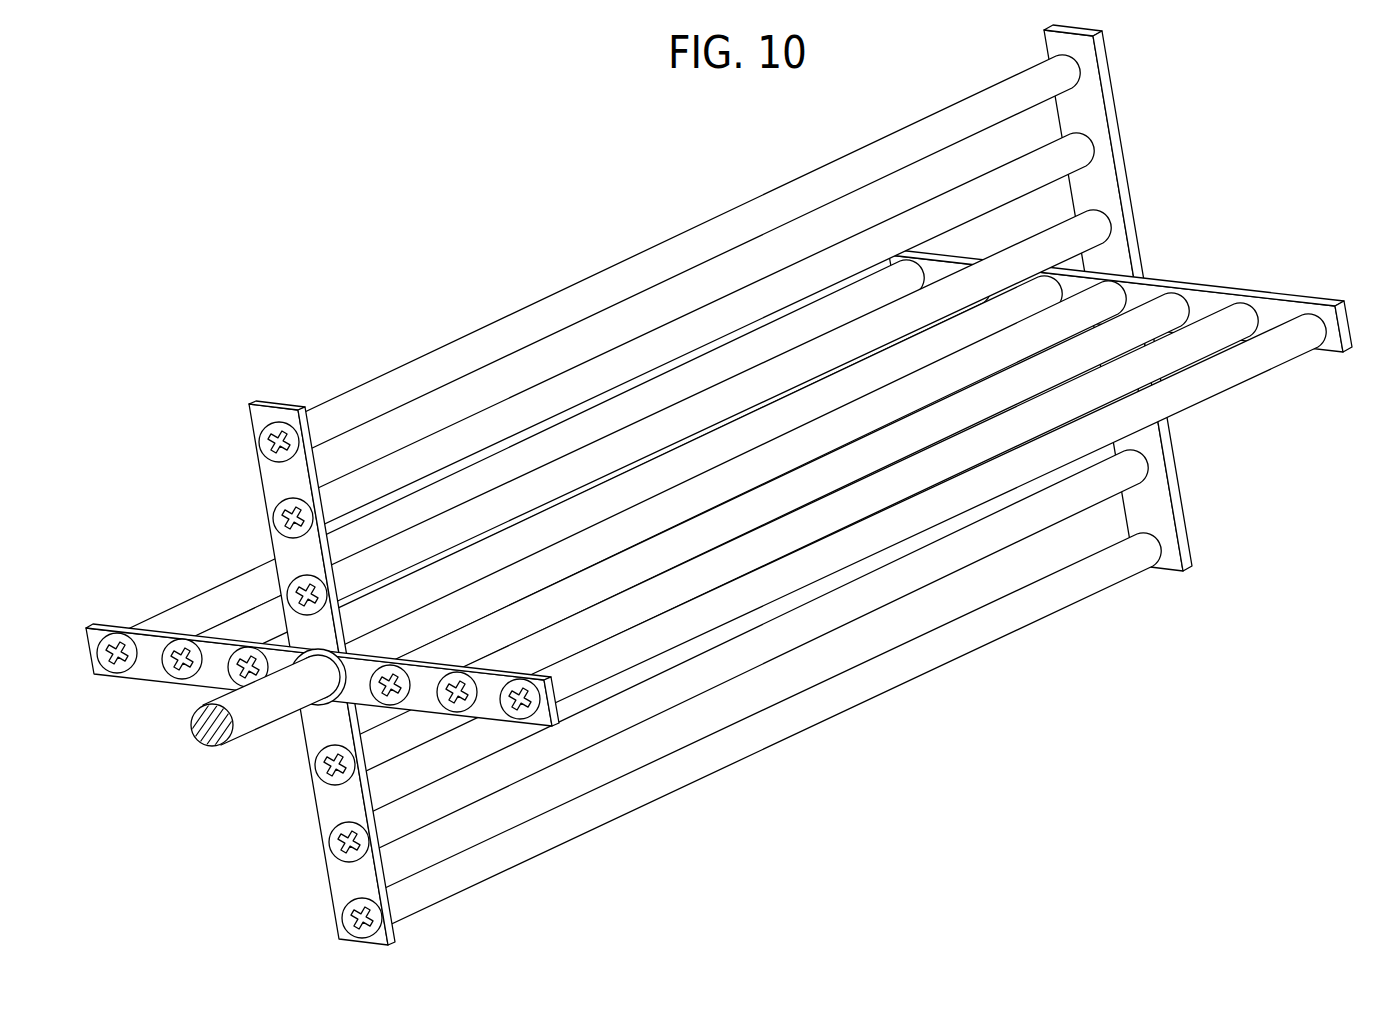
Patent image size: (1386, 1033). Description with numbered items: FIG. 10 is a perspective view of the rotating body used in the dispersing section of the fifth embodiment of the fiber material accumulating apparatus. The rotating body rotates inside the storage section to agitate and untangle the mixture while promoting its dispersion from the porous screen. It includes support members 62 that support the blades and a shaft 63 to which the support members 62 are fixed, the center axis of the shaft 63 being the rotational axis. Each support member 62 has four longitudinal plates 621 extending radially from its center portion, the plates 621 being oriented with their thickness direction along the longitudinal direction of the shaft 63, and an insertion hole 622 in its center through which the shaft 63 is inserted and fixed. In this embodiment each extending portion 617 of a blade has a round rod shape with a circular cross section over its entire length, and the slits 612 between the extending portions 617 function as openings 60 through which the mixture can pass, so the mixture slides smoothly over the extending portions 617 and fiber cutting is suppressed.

The opening 60 is at (717, 495).
The slit 612 is at (908, 462).
The extending portion 617 is at (748, 652).
The support member 62 is at (322, 674).
The plate 621 is at (492, 705).
The insertion hole 622 is at (313, 705).
The shaft 63 is at (1007, 358).